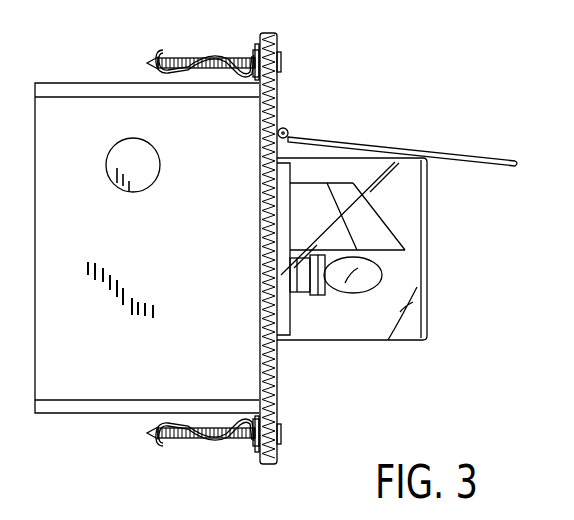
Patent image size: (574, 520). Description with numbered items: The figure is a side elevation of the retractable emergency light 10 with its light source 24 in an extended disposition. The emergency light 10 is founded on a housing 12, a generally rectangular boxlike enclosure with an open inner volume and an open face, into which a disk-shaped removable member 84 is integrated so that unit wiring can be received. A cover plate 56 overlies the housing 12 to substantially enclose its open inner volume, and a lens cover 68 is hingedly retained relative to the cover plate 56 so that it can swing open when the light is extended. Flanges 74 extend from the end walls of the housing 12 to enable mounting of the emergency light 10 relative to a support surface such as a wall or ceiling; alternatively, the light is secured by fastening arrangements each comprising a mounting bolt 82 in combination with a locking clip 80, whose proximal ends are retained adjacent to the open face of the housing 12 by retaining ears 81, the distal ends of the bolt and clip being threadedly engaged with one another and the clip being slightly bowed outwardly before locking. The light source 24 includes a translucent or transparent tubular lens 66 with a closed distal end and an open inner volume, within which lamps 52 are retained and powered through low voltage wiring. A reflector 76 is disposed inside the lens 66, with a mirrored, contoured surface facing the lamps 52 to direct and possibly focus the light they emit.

The retractable emergency light 10 is at (316, 259).
The housing 12 is at (82, 417).
The light source 24 is at (389, 271).
The lamps 52 is at (350, 296).
The cover plate 56 is at (277, 402).
The lens 66 is at (428, 313).
The lens cover 68 is at (473, 155).
The flanges 74 is at (257, 42).
The reflector 76 is at (392, 222).
The locking clip 80 is at (213, 442).
The retaining ears 81 is at (250, 447).
The mounting bolt 82 is at (176, 442).
The removable members 84 is at (152, 147).